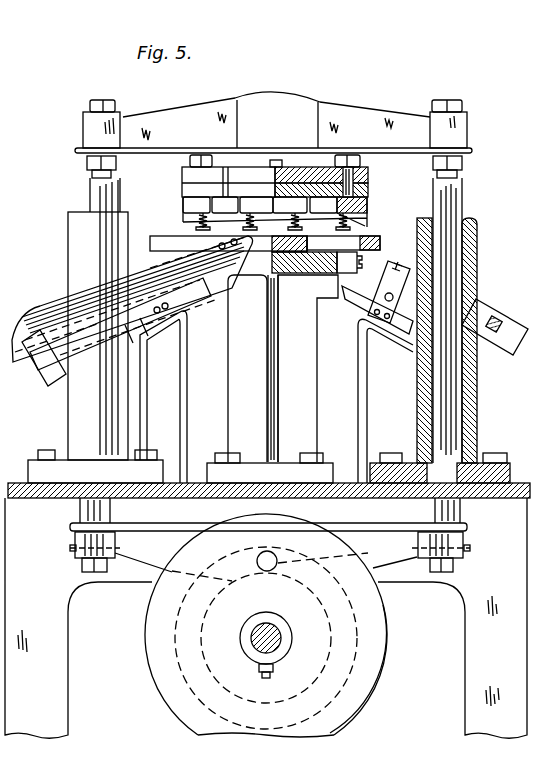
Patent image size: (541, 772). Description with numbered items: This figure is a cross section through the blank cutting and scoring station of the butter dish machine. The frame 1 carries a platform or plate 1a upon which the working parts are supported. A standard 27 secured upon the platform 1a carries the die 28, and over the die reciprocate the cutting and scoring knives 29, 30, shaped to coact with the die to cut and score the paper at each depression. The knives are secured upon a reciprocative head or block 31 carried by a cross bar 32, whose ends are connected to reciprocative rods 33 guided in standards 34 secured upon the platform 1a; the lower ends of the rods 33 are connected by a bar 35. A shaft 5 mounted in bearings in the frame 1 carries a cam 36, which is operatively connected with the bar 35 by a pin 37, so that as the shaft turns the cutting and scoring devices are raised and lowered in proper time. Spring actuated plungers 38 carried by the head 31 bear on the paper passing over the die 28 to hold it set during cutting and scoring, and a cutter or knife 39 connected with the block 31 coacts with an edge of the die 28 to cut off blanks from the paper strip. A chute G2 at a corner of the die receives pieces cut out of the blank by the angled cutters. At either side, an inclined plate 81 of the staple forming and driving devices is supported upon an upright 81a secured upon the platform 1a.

The frame 1 is at (266, 618).
The platform or plate 1a is at (43, 495).
The shaft 5 is at (283, 633).
The standard 27 is at (272, 379).
The die 28 is at (380, 240).
The cutting and scoring knives 29 is at (367, 212).
The cutting and scoring knife 30 is at (248, 200).
The reciprocative head or block 31 is at (368, 172).
The cross bar 32 is at (358, 112).
The reciprocative rods 33 is at (93, 192).
The standards 34 is at (82, 257).
The bar 35 is at (368, 546).
The cam 36 is at (160, 664).
The pin 37 is at (300, 556).
The spring actuated plungers 38 is at (197, 236).
The cutter or knife 39 is at (311, 222).
The plate 81 is at (190, 302).
The upright 81a is at (360, 402).
The chute G2 is at (40, 312).